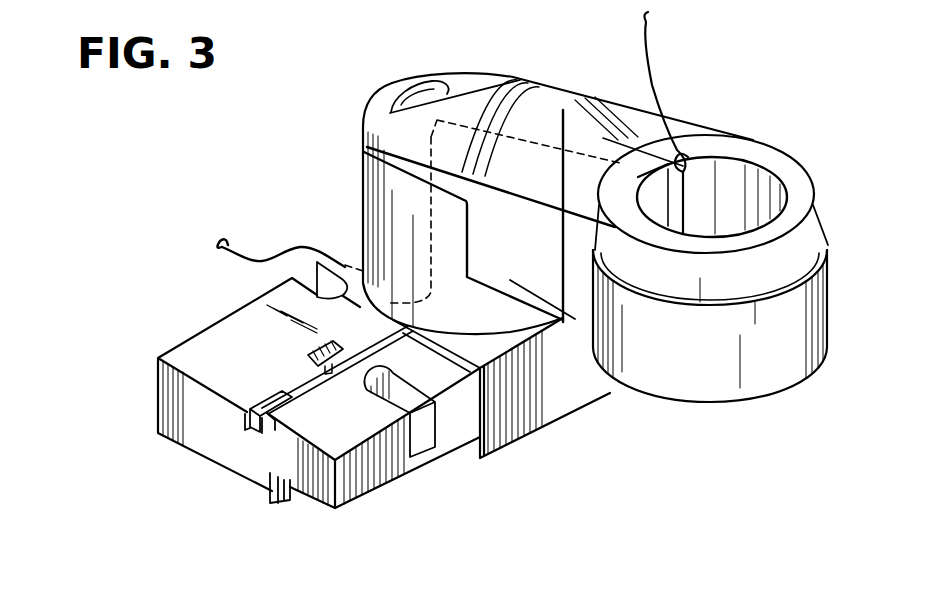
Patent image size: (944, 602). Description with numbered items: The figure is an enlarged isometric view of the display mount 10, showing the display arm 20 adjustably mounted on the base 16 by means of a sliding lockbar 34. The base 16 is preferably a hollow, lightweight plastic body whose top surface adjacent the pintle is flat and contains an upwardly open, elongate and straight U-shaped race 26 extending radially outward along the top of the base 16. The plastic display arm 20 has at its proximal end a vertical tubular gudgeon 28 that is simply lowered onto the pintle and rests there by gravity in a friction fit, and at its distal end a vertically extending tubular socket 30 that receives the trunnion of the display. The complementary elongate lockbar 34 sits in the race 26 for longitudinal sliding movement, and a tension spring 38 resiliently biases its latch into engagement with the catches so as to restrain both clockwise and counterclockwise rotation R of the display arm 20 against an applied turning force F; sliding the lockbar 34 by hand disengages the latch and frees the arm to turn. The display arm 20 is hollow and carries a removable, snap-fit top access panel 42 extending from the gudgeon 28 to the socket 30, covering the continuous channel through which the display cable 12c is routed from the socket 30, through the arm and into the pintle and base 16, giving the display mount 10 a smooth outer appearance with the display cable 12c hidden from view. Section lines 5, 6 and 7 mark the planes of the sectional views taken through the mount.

The display mount 10 is at (565, 520).
The display cable 12c is at (640, 35).
The base 16 is at (222, 320).
The display arm 20 is at (390, 82).
The race 26 is at (263, 405).
The gudgeon 28 is at (363, 217).
The socket 30 is at (817, 328).
The lockbar 34 is at (307, 380).
The tension spring 38 is at (287, 405).
The top access panel 42 is at (468, 103).
The section line 5 is at (133, 488).
The section line 6 is at (313, 170).
The section line 7 is at (233, 448).
The turning force F is at (575, 413).
The rotation R is at (733, 455).